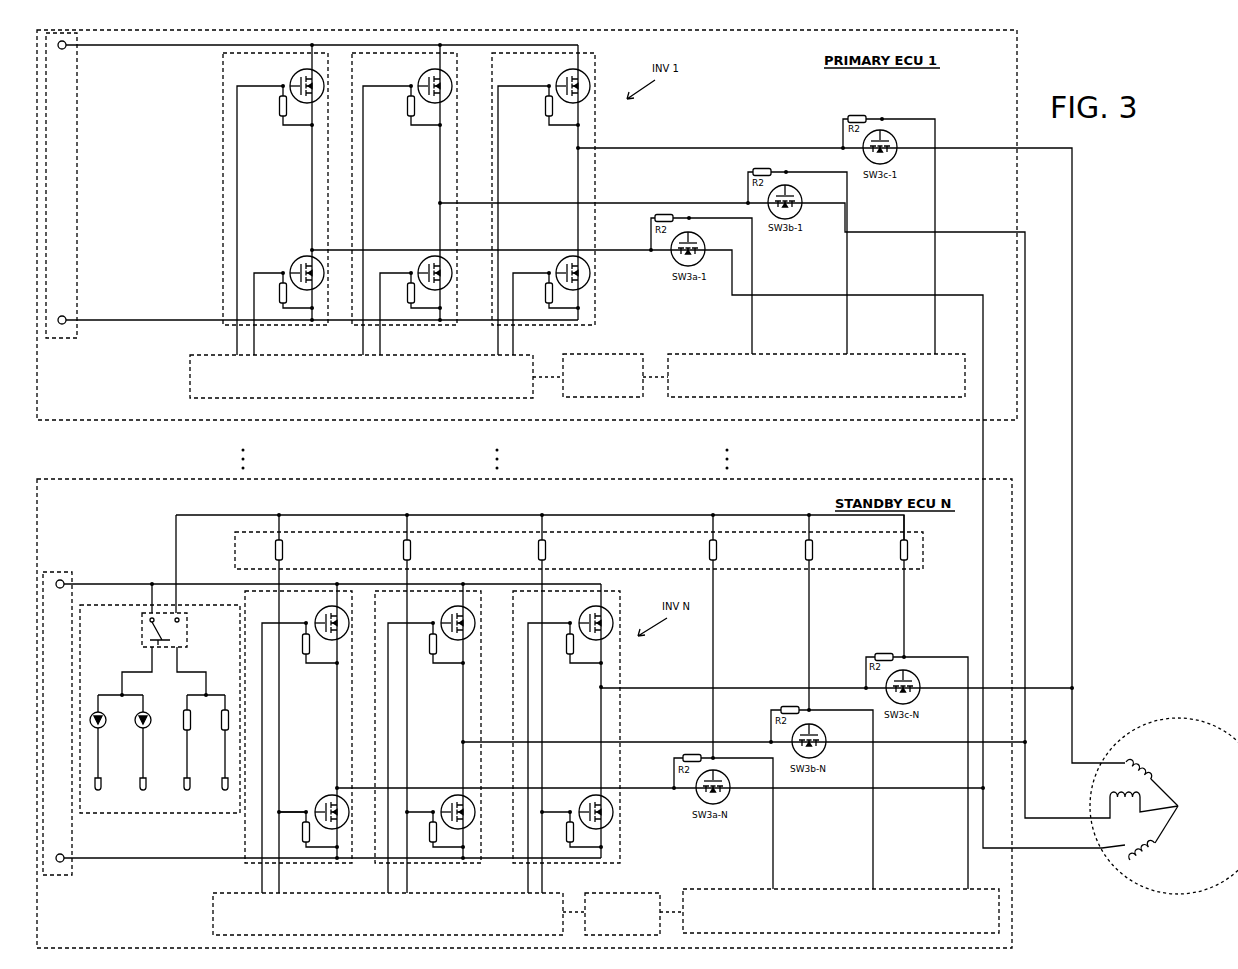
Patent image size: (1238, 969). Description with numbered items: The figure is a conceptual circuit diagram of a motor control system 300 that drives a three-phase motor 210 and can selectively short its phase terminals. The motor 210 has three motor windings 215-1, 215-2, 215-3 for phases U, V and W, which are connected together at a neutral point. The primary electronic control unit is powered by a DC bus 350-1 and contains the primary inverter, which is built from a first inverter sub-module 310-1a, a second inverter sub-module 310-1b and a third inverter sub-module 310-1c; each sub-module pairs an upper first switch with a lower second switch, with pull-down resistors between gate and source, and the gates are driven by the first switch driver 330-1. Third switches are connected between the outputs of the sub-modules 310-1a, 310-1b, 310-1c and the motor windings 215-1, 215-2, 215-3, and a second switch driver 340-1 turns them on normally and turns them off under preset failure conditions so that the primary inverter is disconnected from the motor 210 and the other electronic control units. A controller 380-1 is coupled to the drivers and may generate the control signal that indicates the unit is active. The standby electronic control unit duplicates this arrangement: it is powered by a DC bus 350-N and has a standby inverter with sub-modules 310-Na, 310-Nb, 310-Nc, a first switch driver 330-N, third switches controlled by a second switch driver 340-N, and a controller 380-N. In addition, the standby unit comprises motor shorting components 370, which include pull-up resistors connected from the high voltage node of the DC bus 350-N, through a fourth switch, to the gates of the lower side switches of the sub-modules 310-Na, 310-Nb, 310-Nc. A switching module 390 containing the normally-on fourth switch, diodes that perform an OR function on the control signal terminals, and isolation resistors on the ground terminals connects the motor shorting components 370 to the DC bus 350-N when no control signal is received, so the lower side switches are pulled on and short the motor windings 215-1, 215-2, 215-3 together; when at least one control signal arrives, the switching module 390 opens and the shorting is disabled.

The motor control system 300 is at (1180, 387).
The three-phase motor 210 is at (1110, 780).
The motor winding 215-1 is at (1152, 846).
The motor winding 215-2 is at (1101, 790).
The motor winding 215-3 is at (1092, 768).
The first inverter sub-module 310-1a is at (277, 327).
The second inverter sub-module 310-1b is at (405, 327).
The third inverter sub-module 310-1c is at (560, 327).
The first inverter sub-module 310-Na is at (300, 866).
The second inverter sub-module 310-Nb is at (438, 866).
The third inverter sub-module 310-Nc is at (582, 866).
The first switch driver 330-1 is at (361, 376).
The second switch driver 340-1 is at (816, 375).
The controller 380-1 is at (600, 375).
The first switch driver 330-N is at (388, 914).
The second switch driver 340-N is at (841, 911).
The controller 380-N is at (623, 914).
The DC bus 350-1 is at (57, 340).
The DC bus 350-N is at (52, 877).
The motor shorting components 370 is at (235, 553).
The switching module 390 is at (160, 815).